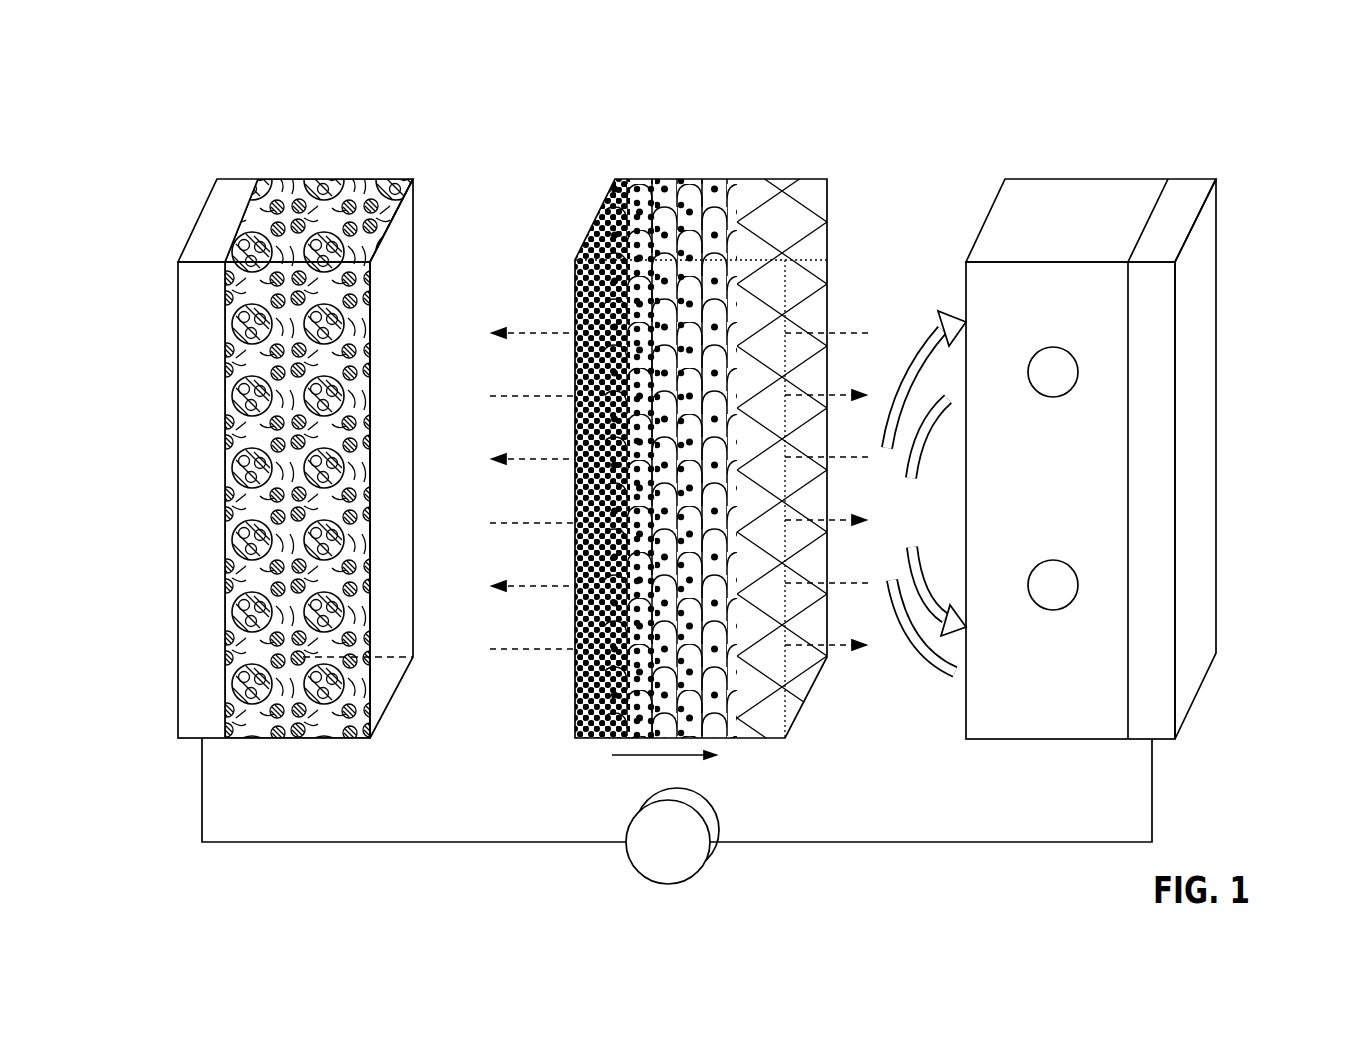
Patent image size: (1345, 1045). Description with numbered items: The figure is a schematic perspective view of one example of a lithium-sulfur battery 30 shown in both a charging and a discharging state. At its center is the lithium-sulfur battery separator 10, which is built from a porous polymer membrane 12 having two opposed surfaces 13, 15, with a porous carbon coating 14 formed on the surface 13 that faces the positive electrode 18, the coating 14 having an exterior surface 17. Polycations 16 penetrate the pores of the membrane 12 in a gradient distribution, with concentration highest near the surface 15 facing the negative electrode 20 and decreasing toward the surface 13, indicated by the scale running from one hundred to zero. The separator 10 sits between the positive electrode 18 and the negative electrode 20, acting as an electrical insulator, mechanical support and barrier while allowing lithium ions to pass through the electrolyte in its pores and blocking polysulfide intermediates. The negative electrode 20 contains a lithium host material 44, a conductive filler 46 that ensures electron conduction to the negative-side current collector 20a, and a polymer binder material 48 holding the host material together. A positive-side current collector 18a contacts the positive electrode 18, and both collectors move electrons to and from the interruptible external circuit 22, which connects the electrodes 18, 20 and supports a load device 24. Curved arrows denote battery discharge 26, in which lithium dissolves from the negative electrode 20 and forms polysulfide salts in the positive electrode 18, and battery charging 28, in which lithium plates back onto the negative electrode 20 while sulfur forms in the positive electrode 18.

The lithium-sulfur battery separator 10 is at (706, 428).
The porous polymer membrane 12 is at (688, 414).
The surface of the porous polymer membrane 13 is at (725, 180).
The porous carbon coating 14 is at (822, 419).
The surface of the porous polymer membrane 15 is at (600, 414).
The polycation 16 is at (602, 210).
The exterior surface of the porous carbon coating 17 is at (795, 180).
The positive electrode 18 is at (1139, 459).
The positive-side current collector 18a is at (1195, 292).
The negative electrode 20 is at (250, 475).
The negative-side current collector 20a is at (178, 586).
The external circuit 22 is at (957, 842).
The load device 24 is at (678, 858).
The battery discharge 26 is at (830, 393).
The battery charging 28 is at (540, 333).
The lithium-sulfur battery 30 is at (1245, 115).
The lithium host material 44 is at (319, 508).
The conductive filler 46 is at (319, 508).
The polymer binder material 48 is at (306, 738).